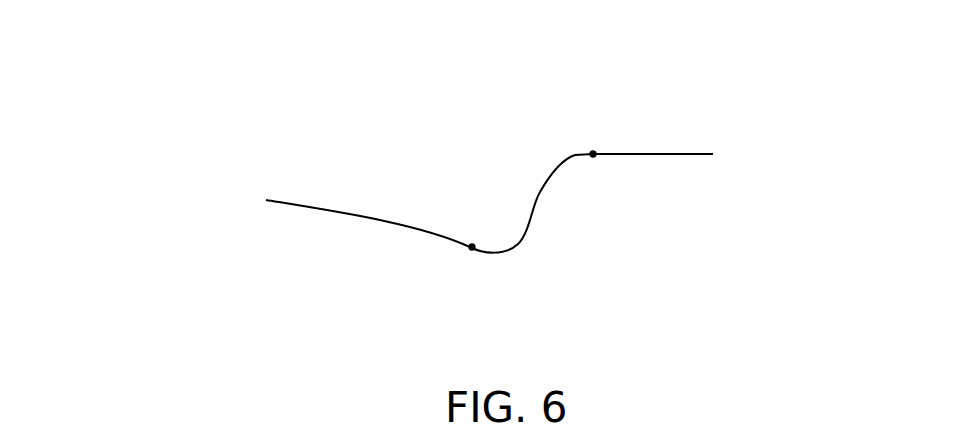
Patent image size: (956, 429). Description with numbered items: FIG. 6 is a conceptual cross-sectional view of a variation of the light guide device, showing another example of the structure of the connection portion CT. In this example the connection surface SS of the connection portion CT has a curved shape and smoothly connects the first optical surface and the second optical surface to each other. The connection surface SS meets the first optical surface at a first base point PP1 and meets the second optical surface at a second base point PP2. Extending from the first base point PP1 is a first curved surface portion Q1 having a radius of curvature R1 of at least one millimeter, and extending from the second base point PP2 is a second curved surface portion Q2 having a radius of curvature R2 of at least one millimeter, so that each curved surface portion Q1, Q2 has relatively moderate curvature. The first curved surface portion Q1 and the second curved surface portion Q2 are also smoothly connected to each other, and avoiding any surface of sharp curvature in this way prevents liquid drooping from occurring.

The connection surface SS is at (537, 197).
The connection portion CT is at (446, 118).
The first curved surface portion Q1 is at (503, 246).
The second curved surface portion Q2 is at (550, 164).
The radius of curvature R1 is at (512, 241).
The radius of curvature R2 is at (554, 174).
The first base point PP1 is at (472, 250).
The second base point PP2 is at (593, 151).